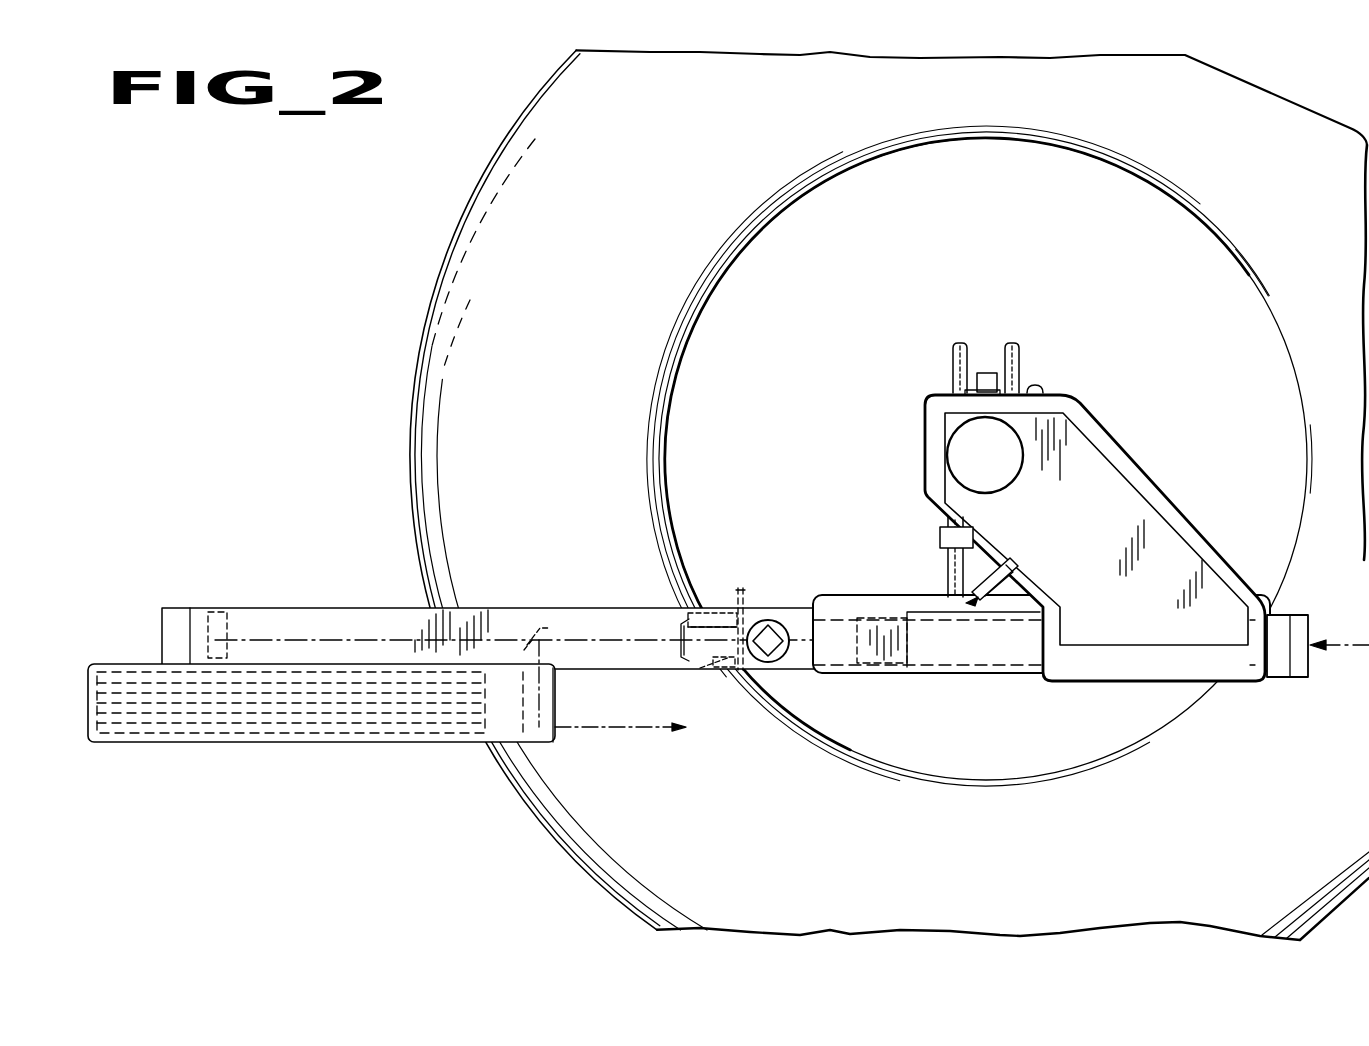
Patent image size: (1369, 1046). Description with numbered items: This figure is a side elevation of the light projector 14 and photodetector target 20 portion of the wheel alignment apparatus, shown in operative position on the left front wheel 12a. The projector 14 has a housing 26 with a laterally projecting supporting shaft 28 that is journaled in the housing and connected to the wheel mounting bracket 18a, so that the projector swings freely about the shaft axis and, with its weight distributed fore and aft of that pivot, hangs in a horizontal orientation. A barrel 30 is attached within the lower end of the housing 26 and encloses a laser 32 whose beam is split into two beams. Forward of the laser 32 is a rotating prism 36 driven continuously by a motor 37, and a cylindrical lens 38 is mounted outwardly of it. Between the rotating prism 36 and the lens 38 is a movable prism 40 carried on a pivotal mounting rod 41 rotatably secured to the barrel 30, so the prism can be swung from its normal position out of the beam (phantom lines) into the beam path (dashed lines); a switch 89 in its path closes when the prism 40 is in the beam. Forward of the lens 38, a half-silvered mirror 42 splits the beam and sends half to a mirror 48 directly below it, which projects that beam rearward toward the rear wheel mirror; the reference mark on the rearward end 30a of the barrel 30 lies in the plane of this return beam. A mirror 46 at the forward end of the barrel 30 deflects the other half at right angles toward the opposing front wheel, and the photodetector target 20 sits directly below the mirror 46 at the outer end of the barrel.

The left front wheel 12a is at (455, 261).
The light projector 14 is at (326, 596).
The mounting bracket 18a is at (945, 520).
The photodetector target 20 is at (175, 748).
The housing 26 is at (1120, 455).
The supporting shaft 28 is at (1000, 468).
The barrel 30 is at (475, 610).
The rearward end 30a is at (1310, 622).
The laser 32 is at (993, 665).
The rotating prism 36 is at (781, 626).
The motor 37 is at (784, 660).
The cylindrical lens 38 is at (672, 645).
The movable prism 40 is at (690, 610).
The pivotal mounting rod 41 is at (748, 608).
The half-silvered mirror 42 is at (550, 626).
The mirror 46 is at (228, 621).
The mirror 48 is at (556, 736).
The switch 89 is at (710, 666).